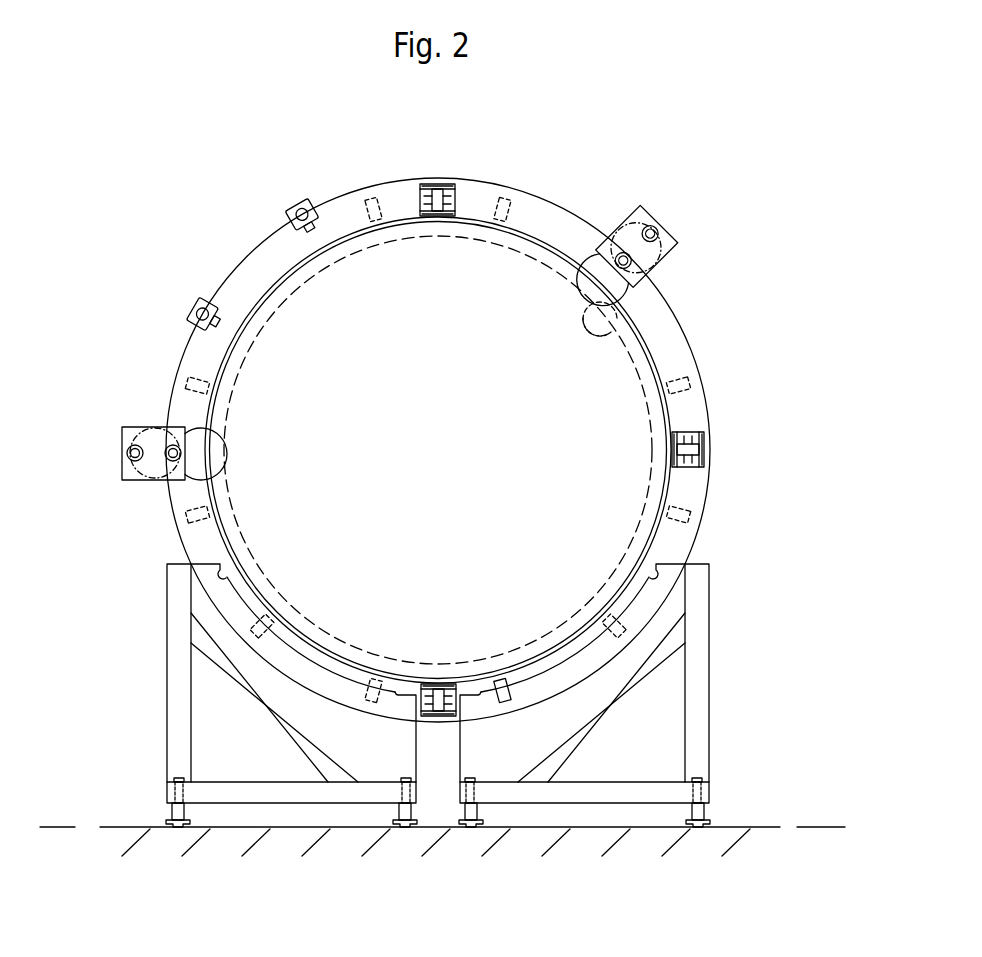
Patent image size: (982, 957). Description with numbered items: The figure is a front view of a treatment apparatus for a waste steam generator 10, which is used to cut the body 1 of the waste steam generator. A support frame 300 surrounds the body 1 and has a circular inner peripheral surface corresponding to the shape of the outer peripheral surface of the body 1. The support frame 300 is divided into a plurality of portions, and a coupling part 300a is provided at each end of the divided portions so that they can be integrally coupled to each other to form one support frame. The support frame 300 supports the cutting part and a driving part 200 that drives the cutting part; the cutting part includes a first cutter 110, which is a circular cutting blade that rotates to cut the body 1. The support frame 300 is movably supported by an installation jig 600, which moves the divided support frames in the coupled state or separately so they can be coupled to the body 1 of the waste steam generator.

The treatment apparatus for a waste steam generator 10 is at (442, 515).
The body of the waste steam generator 1 is at (545, 440).
The first cutter 110 is at (608, 336).
The driving part 200 is at (441, 313).
The support frame 300 is at (438, 421).
The coupling part 300a is at (433, 186).
The installation jig 600 is at (442, 710).